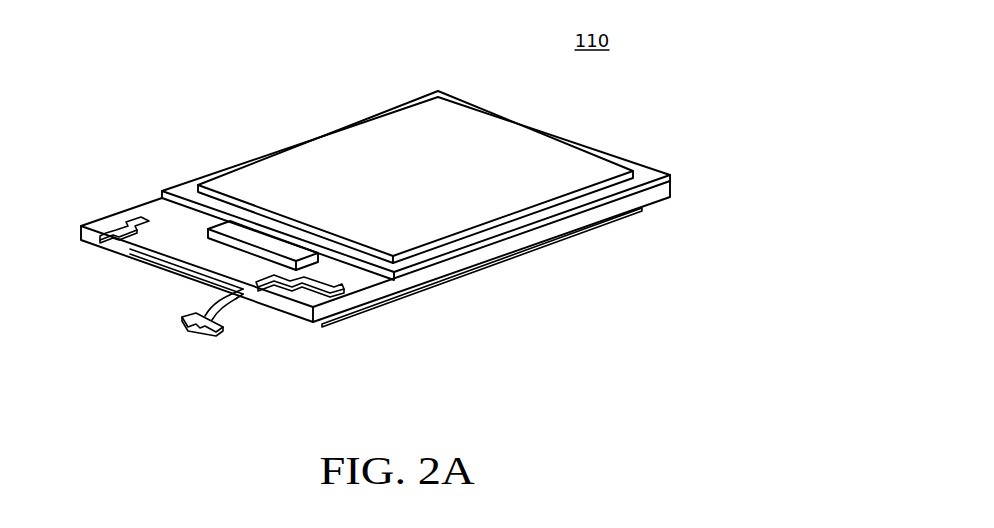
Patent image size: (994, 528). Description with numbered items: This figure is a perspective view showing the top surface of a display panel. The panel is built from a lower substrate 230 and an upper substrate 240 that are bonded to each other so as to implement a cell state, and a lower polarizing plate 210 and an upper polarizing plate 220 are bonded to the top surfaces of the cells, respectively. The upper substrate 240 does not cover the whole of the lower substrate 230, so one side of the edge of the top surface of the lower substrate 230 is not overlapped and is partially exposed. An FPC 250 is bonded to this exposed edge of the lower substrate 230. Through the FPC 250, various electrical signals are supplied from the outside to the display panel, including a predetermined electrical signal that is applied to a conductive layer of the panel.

The lower polarizing plate 210 is at (643, 210).
The upper polarizing plate 220 is at (612, 168).
The lower substrate 230 is at (673, 190).
The upper substrate 240 is at (672, 177).
The FPC 250 is at (203, 334).